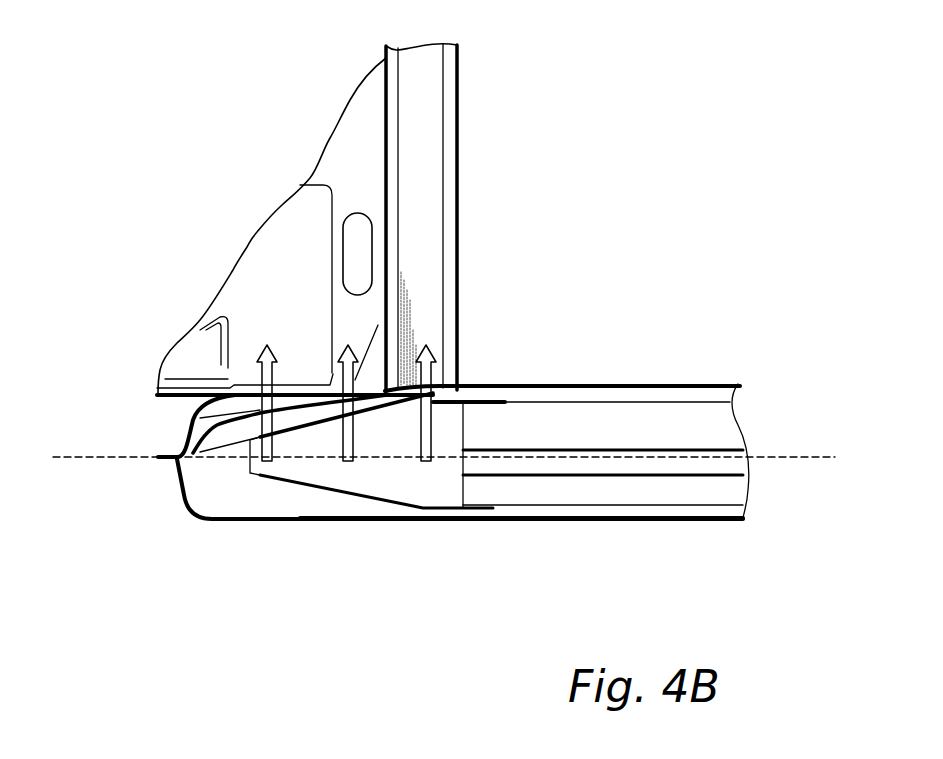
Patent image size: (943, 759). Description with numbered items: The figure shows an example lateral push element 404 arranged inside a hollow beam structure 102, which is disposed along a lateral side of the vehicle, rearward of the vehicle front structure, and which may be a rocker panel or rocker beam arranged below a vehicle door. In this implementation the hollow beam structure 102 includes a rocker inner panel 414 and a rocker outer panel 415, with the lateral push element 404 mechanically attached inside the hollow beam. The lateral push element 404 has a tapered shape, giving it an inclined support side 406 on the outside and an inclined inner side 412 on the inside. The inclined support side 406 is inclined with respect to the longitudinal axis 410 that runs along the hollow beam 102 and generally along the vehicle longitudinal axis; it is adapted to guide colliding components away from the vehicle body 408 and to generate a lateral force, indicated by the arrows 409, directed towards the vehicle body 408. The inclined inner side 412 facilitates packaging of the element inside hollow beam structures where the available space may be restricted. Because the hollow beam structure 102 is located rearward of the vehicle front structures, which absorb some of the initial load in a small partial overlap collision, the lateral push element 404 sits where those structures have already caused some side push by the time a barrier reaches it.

The hollow beam structure 102 is at (542, 531).
The lateral push element 404 is at (342, 482).
The inclined support side 406 is at (265, 523).
The vehicle body 408 is at (318, 116).
The arrows 409 is at (342, 373).
The longitudinal axis 410 is at (82, 457).
The inclined inner side 412 is at (383, 393).
The rocker inner panel 414 is at (598, 386).
The rocker outer panel 415 is at (645, 520).